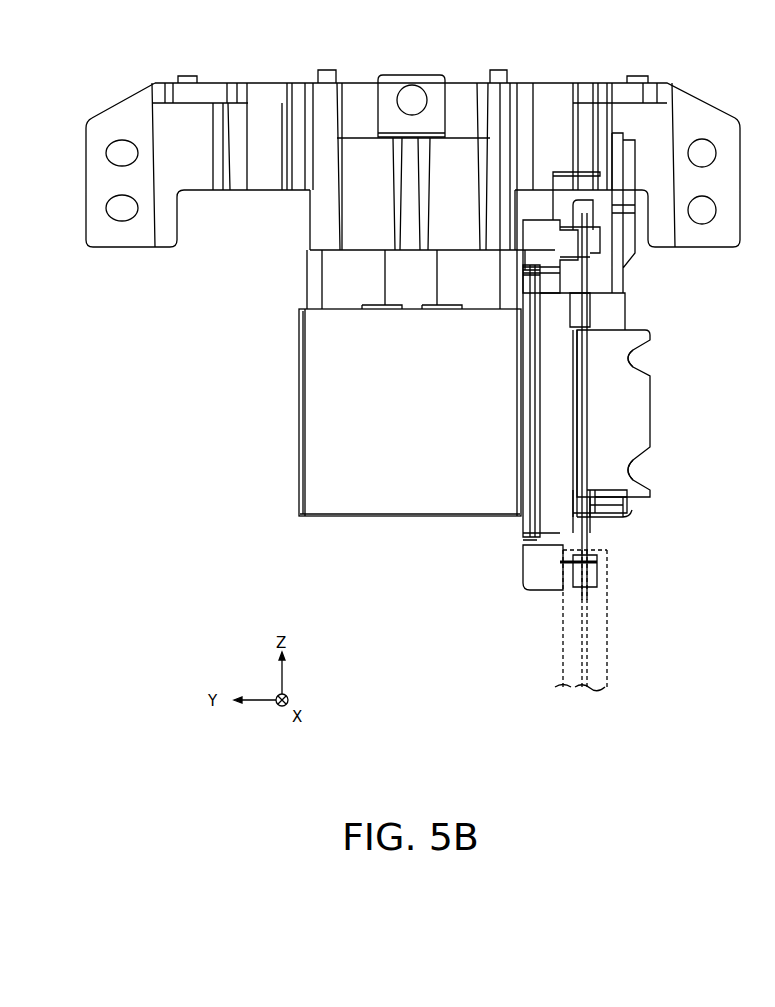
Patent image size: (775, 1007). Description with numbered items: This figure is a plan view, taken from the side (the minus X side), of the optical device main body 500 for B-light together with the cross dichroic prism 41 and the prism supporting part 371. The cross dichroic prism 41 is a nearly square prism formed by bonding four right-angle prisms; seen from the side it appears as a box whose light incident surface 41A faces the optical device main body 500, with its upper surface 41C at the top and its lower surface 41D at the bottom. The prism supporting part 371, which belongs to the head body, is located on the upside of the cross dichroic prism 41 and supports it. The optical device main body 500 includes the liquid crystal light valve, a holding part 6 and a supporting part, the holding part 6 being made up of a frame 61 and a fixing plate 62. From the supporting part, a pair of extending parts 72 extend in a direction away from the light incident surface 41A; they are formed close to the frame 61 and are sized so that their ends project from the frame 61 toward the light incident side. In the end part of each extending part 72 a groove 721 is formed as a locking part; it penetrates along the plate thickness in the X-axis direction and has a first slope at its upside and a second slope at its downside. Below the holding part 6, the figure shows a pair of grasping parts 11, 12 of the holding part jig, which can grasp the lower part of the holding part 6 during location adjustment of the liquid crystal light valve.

The prism supporting part 371 is at (700, 112).
The cross dichroic prism 41 is at (401, 503).
The light incident surface 41A is at (315, 430).
The upper surface 41C is at (333, 307).
The lower surface 41D is at (337, 518).
The optical device main body 500 is at (677, 313).
The extending part 72 is at (648, 410).
The groove 721 is at (657, 352).
The frame 61 is at (627, 503).
The fixing plate 62 is at (580, 523).
The holding part 6 is at (710, 503).
The grasping part 11 is at (605, 615).
The grasping part 12 is at (565, 668).